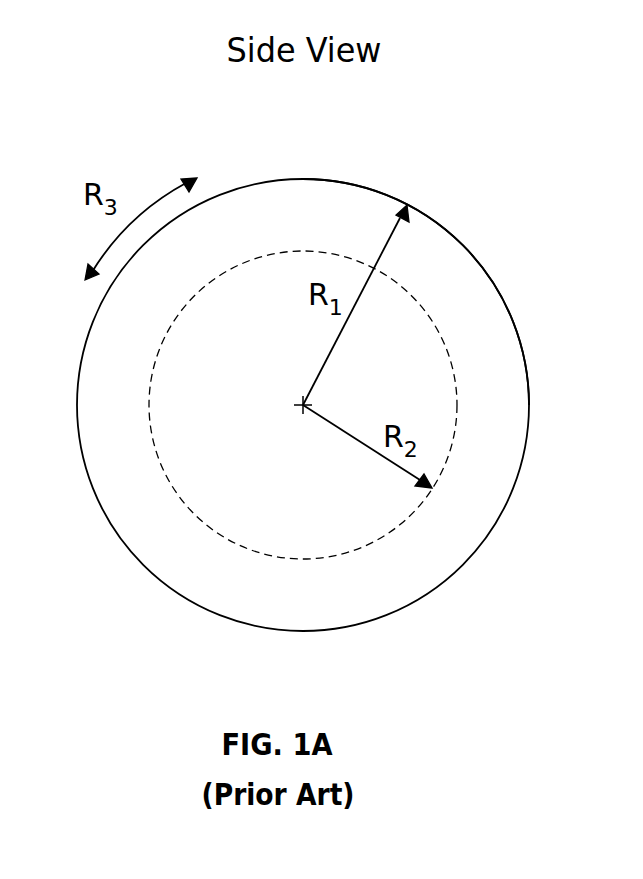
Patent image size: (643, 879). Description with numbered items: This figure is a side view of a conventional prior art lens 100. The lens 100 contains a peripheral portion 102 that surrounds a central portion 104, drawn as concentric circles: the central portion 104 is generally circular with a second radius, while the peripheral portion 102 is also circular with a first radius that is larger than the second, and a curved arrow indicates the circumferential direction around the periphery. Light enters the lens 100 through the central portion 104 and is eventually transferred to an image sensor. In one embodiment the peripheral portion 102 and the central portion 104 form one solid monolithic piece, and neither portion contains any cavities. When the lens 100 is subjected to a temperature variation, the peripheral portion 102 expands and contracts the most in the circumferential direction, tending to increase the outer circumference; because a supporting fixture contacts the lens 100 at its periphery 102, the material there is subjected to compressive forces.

The conventional lens 100 is at (505, 162).
The peripheral portion 102 is at (482, 302).
The central portion 104 is at (380, 510).